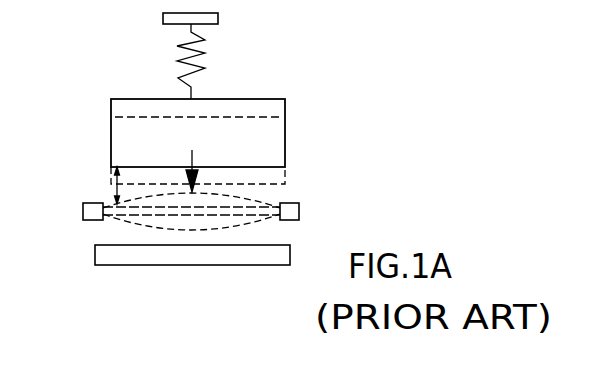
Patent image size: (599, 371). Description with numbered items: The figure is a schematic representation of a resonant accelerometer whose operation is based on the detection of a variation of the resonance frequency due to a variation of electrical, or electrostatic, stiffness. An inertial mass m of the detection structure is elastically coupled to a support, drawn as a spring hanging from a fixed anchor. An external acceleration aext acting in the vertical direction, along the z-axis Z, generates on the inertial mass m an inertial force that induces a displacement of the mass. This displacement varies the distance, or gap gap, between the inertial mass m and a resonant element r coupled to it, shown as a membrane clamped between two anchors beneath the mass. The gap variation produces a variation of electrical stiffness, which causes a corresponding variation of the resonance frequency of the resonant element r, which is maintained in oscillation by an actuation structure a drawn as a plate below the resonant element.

The z-axis Z is at (275, 0).
The inertial mass m is at (198, 145).
The external acceleration aext is at (63, 98).
The element gap is at (112, 187).
The resonant element r is at (265, 204).
The actuation structure a is at (93, 267).